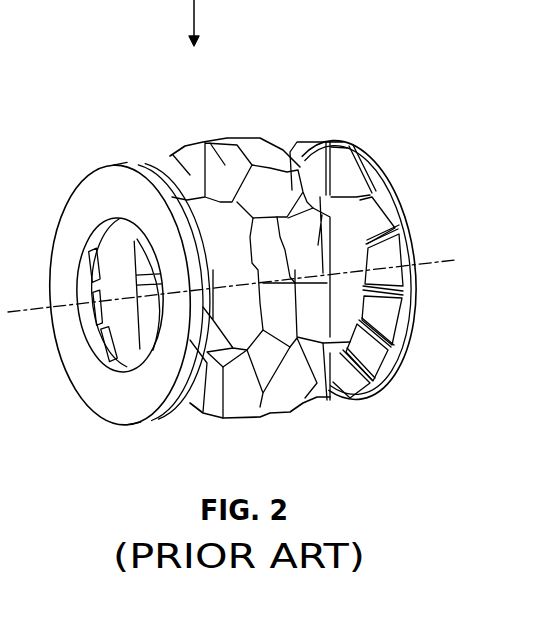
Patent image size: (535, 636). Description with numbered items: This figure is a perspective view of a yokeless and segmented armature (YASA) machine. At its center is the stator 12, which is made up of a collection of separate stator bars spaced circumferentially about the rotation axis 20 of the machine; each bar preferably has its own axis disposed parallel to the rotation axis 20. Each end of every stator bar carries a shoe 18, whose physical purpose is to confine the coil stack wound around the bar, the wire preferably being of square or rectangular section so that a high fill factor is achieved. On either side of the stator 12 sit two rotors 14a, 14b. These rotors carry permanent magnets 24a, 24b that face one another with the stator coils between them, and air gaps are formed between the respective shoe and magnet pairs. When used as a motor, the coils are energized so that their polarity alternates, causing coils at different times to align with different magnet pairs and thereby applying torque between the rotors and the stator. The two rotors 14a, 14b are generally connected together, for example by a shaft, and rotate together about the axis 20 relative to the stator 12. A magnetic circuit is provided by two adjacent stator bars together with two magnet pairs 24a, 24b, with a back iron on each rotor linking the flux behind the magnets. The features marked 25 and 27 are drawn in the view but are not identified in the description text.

The stator 12 is at (258, 136).
The rotor 14a is at (110, 166).
The rotor 14b is at (350, 143).
The shoe 18 is at (241, 398).
The rotation axis 20 is at (27, 312).
The permanent magnet 24a is at (199, 416).
The permanent magnet 24b is at (373, 365).
The spoke 25 is at (392, 198).
The seam 27 is at (173, 155).